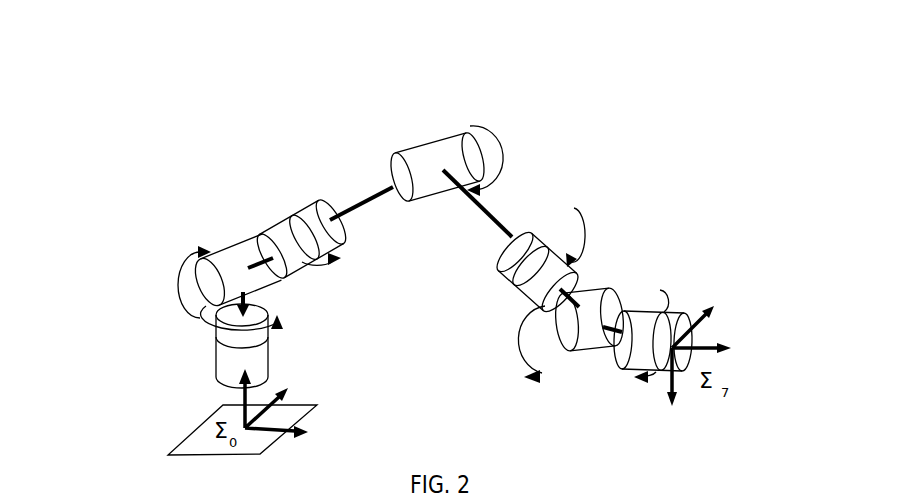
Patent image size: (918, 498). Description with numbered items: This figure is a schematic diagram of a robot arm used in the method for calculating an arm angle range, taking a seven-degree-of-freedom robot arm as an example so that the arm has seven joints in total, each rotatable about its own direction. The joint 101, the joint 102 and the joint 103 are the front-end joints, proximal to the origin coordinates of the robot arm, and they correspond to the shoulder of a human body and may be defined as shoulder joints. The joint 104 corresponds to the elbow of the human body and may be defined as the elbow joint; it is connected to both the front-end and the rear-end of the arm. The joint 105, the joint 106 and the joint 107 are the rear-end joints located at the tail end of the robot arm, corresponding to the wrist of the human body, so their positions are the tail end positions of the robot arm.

The joint 101 is at (250, 345).
The joint 102 is at (235, 262).
The joint 103 is at (328, 220).
The joint 104 is at (443, 135).
The joint 105 is at (548, 280).
The joint 106 is at (605, 317).
The joint 107 is at (682, 325).